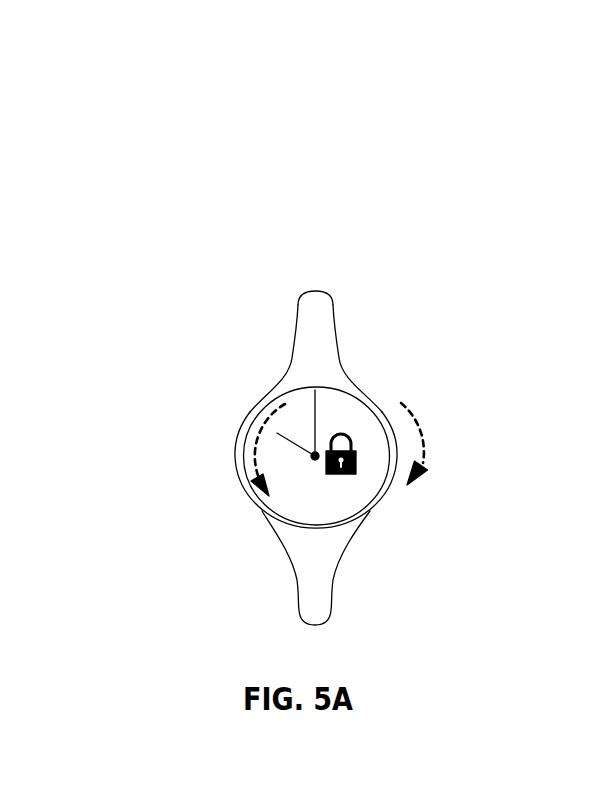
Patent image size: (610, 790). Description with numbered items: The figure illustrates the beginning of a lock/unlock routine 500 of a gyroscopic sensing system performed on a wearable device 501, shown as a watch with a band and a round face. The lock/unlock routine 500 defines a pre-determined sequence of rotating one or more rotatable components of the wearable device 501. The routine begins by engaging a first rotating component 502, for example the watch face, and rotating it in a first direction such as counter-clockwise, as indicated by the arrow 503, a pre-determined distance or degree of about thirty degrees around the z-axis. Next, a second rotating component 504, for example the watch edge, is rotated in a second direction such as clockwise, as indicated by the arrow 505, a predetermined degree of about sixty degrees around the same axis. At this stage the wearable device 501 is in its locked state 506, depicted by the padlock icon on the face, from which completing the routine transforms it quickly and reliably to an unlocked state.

The lock/unlock routine 500 is at (229, 99).
The wearable device 501 is at (310, 308).
The first rotating component 502 is at (303, 407).
The arrow 503 is at (255, 463).
The second rotating component 504 is at (393, 425).
The arrow 505 is at (425, 453).
The locked state 506 is at (352, 445).